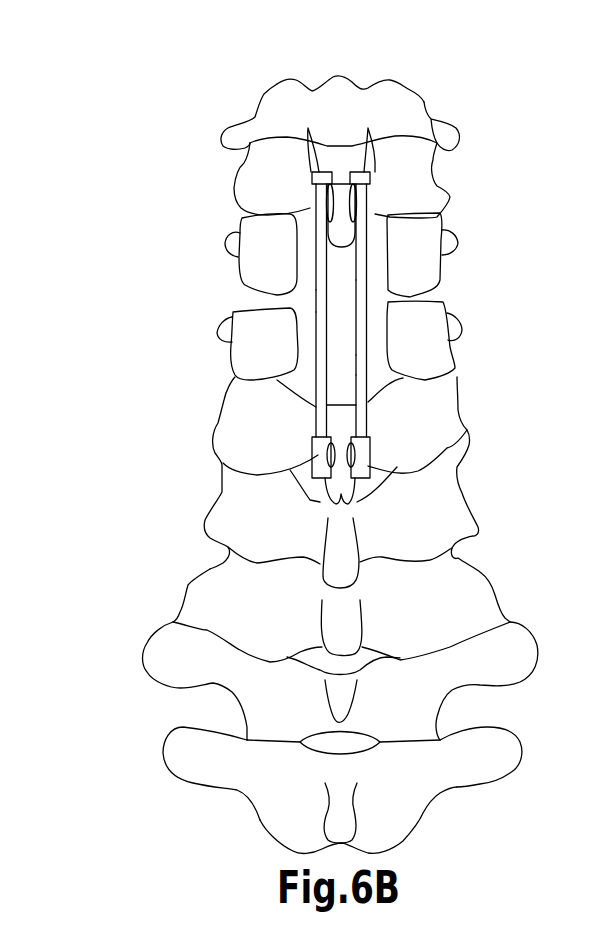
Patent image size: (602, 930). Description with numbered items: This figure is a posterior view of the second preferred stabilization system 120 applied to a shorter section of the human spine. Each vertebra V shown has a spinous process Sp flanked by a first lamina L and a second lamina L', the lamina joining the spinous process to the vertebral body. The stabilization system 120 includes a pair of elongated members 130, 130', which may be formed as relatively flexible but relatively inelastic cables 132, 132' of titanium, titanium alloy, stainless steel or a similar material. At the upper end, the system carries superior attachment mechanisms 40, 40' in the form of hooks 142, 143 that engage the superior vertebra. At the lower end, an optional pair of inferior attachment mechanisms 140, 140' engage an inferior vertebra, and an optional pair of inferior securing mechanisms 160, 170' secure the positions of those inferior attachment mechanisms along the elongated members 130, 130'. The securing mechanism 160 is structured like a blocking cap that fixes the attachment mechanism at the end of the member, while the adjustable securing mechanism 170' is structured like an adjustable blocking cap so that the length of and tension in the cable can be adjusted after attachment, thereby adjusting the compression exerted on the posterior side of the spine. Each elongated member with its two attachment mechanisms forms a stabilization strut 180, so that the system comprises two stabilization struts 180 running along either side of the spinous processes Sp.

The left upper hook 142 is at (317, 168).
The right upper hook 143 is at (371, 165).
The first lamina L is at (245, 146).
The second lamina L' is at (427, 140).
The superior attachment mechanism 40 is at (239, 178).
The superior attachment mechanism 40' is at (448, 178).
The spinous process Sp is at (512, 544).
The vertebra V is at (418, 192).
The stabilization system 120 is at (367, 260).
The cable 132 is at (228, 237).
The cable 132' is at (464, 317).
The stabilization strut 180 is at (314, 305).
The elongated member 130 is at (228, 374).
The elongated member 130' is at (463, 379).
The inferior attachment mechanism 140 is at (226, 444).
The inferior attachment mechanism 140' is at (454, 446).
The inferior securing mechanism 160 is at (325, 482).
The adjustable securing mechanism 170' is at (462, 472).